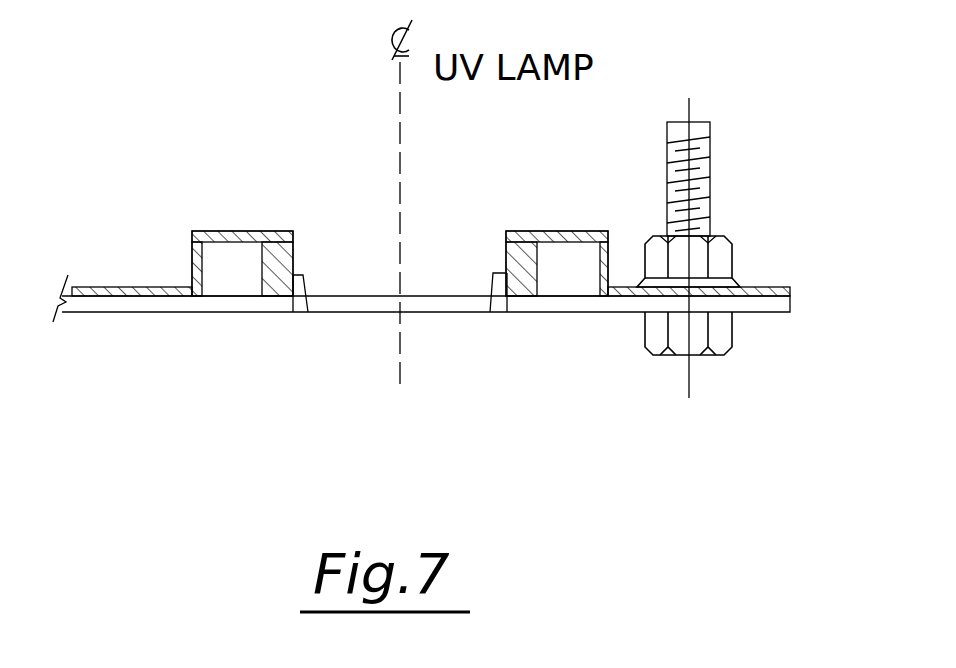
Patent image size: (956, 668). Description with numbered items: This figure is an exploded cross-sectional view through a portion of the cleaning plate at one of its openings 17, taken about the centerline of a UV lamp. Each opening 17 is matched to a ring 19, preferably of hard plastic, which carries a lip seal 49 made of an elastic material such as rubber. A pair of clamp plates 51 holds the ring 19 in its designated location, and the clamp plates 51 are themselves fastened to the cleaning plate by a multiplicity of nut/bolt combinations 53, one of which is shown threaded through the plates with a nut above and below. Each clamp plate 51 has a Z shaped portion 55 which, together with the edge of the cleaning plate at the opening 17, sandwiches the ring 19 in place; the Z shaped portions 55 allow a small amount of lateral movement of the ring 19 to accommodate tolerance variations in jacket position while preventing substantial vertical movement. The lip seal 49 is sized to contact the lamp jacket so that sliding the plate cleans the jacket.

The opening 17 is at (378, 312).
The ring 19 is at (262, 277).
The lip seal 49 is at (493, 296).
The clamp plate 51 is at (112, 286).
The nut/bolt combination 53 is at (710, 163).
The Z shaped portion 55 is at (234, 247).